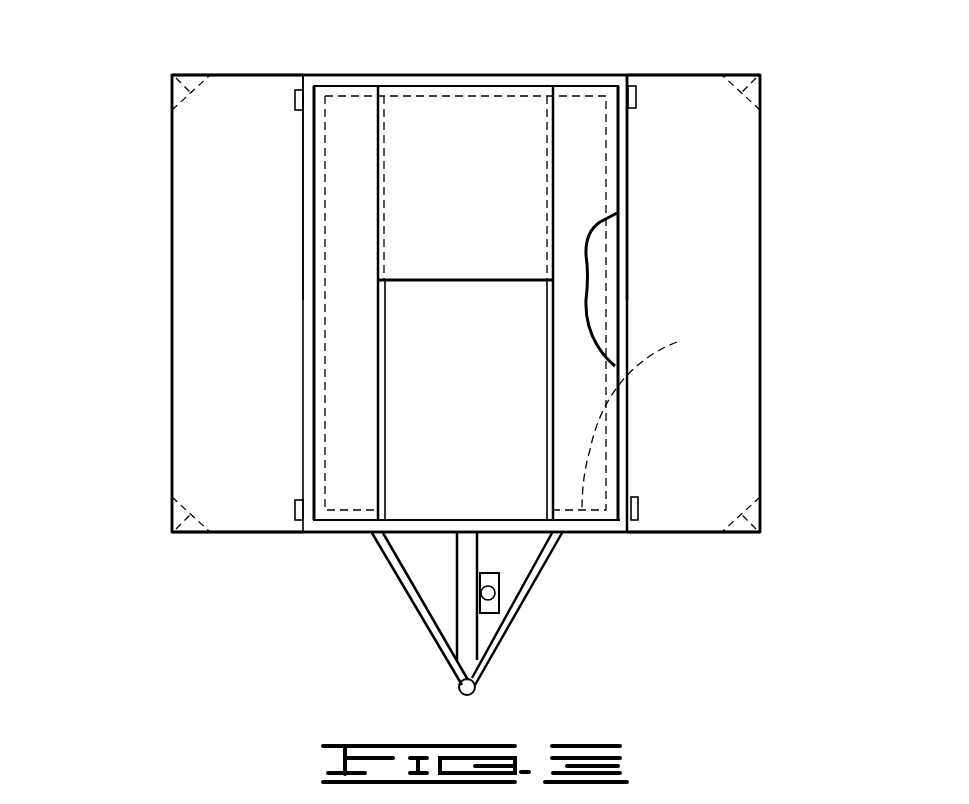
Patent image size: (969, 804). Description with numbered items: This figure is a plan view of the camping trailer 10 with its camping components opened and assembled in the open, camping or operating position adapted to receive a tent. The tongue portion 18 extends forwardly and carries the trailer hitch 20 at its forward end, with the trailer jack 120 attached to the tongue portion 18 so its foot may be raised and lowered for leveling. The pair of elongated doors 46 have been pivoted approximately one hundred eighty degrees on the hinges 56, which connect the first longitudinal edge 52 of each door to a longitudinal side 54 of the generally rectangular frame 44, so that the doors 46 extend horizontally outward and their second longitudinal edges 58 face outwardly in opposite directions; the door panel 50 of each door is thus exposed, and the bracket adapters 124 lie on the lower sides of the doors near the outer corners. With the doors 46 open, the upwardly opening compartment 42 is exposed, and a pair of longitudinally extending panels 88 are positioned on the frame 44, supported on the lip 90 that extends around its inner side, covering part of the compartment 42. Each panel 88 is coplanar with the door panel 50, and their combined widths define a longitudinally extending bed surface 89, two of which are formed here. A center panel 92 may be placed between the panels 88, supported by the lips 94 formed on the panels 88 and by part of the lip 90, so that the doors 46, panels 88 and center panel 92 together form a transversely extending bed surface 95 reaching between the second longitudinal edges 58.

The camping trailer 10 is at (778, 255).
The tongue portion 18 is at (537, 570).
The trailer hitch 20 is at (473, 683).
The compartment 42 is at (407, 418).
The frame 44 is at (625, 223).
The doors 46 is at (190, 325).
The door panel 50 is at (255, 284).
The first longitudinal edge 52 is at (303, 190).
The longitudinal side 54 is at (303, 143).
The hinges 56 is at (295, 105).
The second longitudinal edges 58 is at (172, 243).
The panels 88 is at (340, 242).
The bed surface 89 is at (353, 482).
The lip 90 is at (428, 96).
The center panel 92 is at (432, 258).
The lips 94 is at (382, 312).
The transverse bed surface 95 is at (345, 112).
The trailer jack 120 is at (492, 597).
The bracket adapters 124 is at (172, 105).